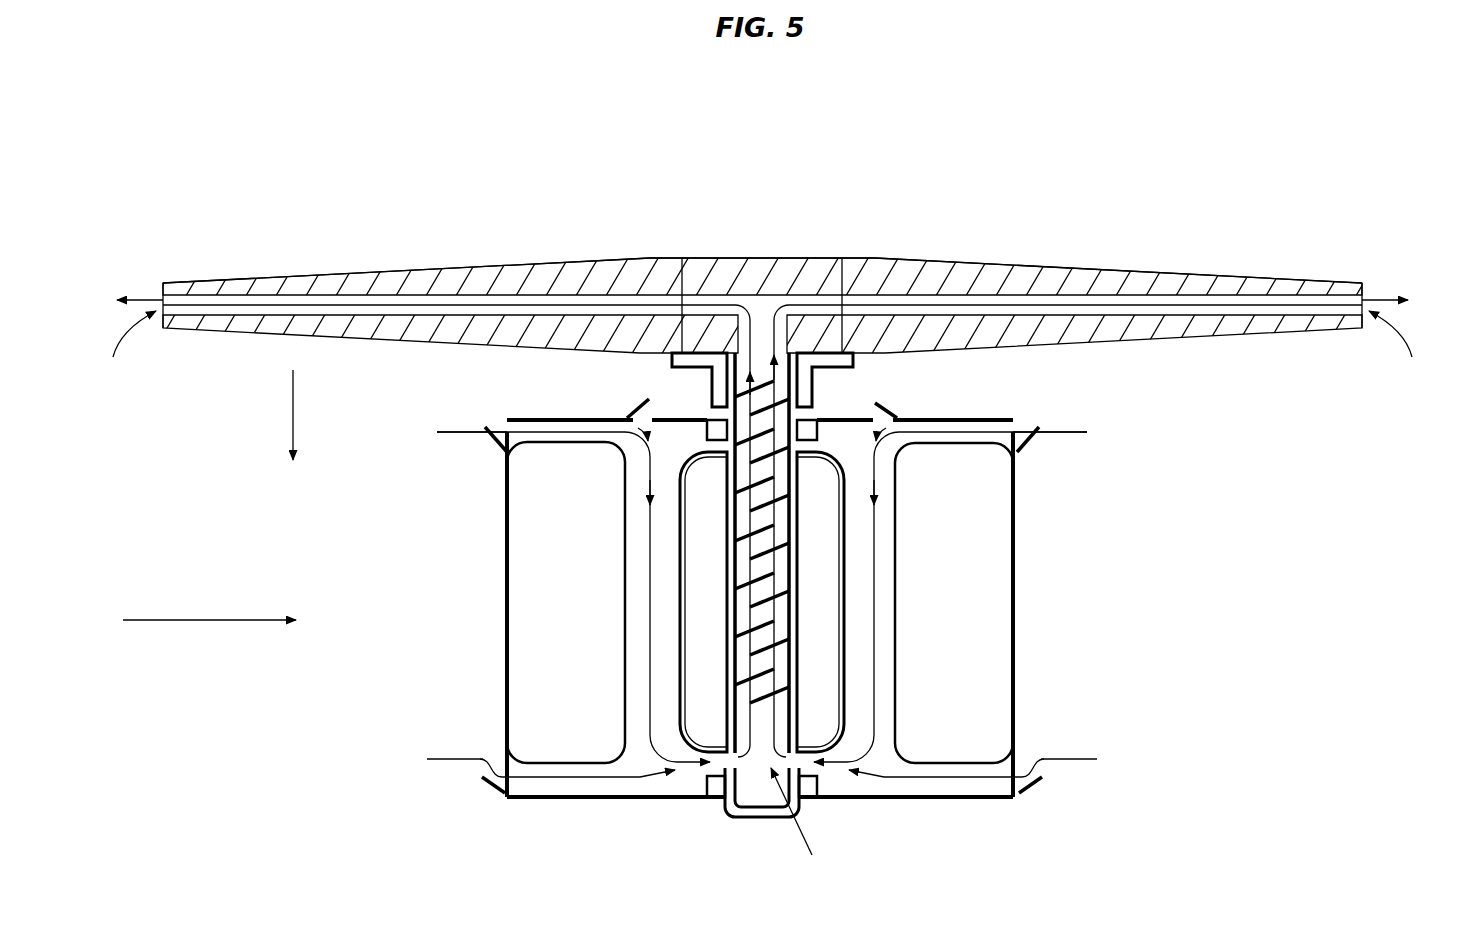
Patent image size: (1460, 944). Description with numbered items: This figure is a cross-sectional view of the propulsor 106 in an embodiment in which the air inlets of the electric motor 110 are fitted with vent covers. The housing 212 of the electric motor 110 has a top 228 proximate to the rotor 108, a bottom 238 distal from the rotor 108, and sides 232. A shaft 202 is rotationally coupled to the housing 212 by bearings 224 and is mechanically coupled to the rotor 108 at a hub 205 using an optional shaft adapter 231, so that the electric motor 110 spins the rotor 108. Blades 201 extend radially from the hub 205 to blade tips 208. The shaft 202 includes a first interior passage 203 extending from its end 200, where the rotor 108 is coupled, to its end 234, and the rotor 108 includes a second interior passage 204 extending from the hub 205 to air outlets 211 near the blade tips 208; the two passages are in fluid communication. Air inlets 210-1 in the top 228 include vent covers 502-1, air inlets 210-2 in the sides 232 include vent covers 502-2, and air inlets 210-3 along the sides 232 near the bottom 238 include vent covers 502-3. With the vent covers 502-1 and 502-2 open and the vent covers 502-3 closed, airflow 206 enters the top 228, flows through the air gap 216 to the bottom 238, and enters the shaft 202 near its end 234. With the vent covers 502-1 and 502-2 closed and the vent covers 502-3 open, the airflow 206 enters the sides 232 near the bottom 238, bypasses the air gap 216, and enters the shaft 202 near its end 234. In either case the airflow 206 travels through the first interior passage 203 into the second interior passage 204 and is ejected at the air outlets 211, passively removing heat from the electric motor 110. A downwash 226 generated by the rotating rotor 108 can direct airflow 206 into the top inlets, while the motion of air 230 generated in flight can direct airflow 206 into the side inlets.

The propulsor 106 is at (655, 155).
The rotor 108 is at (878, 238).
The electric motor 110 is at (1241, 563).
The end of shaft 200 is at (760, 337).
The blades 201 is at (395, 271).
The shaft 202 is at (722, 813).
The first interior passage 203 is at (812, 820).
The second interior passage 204 is at (940, 292).
The hub 205 is at (840, 285).
The airflow 206 is at (160, 286).
The blade tips 208 is at (170, 248).
The air inlets 210-1 is at (649, 406).
The air inlets 210-2 is at (496, 419).
The air inlets 210-3 is at (496, 760).
The air outlets 211 is at (773, 348).
The housing 212 is at (538, 801).
The air gap 216 is at (630, 553).
The bearings 224 is at (812, 432).
The downwash 226 is at (295, 398).
The top 228 is at (540, 416).
The motion of air 230 is at (210, 622).
The shaft adapter 231 is at (682, 258).
The sides 232 is at (499, 546).
The end of shaft 234 is at (752, 864).
The bottom 238 is at (929, 805).
The vent covers 502-1 is at (642, 392).
The vent covers 502-2 is at (489, 442).
The vent covers 502-3 is at (488, 789).